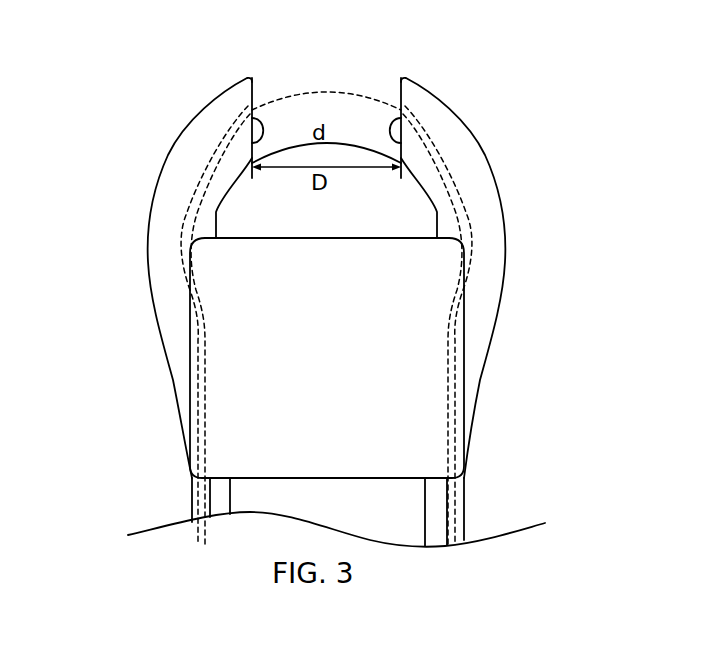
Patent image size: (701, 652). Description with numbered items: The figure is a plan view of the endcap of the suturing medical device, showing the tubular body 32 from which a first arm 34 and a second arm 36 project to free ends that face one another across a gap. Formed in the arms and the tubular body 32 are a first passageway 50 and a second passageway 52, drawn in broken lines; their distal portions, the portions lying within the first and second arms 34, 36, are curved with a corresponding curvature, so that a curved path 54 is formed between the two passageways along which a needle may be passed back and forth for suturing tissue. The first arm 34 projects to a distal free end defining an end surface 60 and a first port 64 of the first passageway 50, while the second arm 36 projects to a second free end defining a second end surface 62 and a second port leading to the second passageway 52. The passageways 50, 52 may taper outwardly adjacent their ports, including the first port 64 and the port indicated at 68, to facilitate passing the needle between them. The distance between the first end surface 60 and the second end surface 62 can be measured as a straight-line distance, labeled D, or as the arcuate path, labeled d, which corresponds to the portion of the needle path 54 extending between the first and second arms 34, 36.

The tubular body 32 is at (283, 392).
The first arm 34 is at (198, 110).
The second arm 36 is at (437, 97).
The first passageway 50 is at (176, 226).
The second passageway 52 is at (473, 220).
The curved path 54 is at (318, 92).
The end surface 60 is at (253, 97).
The second end surface 62 is at (400, 97).
The first port 64 is at (252, 143).
The second lug 68 is at (401, 143).